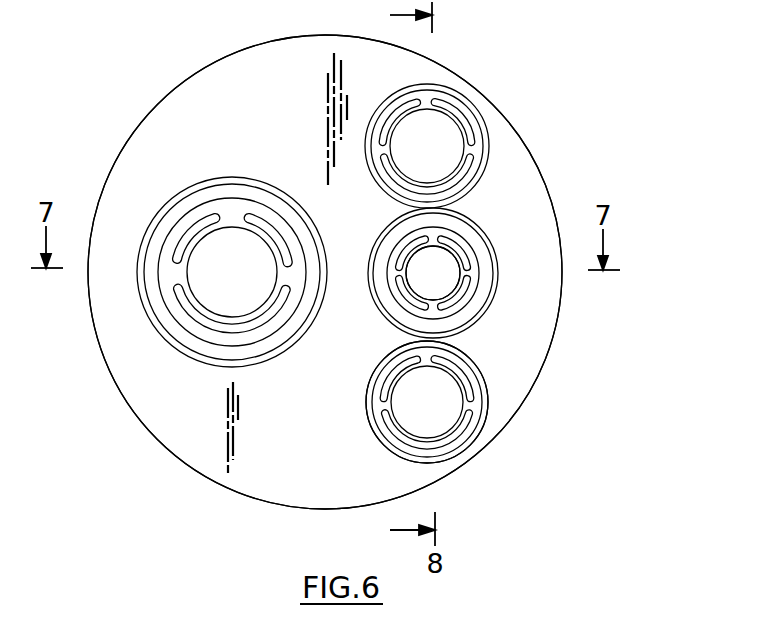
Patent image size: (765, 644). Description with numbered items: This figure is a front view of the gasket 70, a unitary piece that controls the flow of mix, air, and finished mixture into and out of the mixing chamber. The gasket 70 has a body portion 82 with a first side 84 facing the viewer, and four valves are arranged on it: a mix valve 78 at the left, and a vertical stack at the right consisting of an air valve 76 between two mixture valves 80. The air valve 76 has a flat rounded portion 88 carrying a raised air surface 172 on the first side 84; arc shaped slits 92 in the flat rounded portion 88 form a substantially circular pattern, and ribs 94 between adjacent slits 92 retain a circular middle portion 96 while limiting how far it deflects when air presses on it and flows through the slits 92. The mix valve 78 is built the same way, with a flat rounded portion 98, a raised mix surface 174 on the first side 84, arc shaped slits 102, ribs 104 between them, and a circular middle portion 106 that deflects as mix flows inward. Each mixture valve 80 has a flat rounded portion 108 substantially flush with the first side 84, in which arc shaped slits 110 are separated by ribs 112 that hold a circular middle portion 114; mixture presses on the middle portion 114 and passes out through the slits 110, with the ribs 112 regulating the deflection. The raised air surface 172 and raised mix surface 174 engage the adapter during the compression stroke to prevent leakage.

The gasket 70 is at (585, 127).
The air valve 76 is at (478, 256).
The mix valve 78 is at (160, 210).
The mixture valves 80 is at (456, 93).
The body portion 82 is at (266, 73).
The first side 84 is at (208, 443).
The flat rounded portion 88 is at (472, 250).
The arc shaped slits 92 is at (453, 243).
The ribs 94 is at (432, 308).
The circular middle portion 96 is at (446, 284).
The flat rounded portion 98 is at (196, 221).
The arc shaped slits 102 is at (176, 290).
The ribs 104 is at (228, 213).
The circular middle portion 106 is at (220, 294).
The flat rounded portion 108 is at (467, 453).
The arc shaped slits 110 is at (404, 445).
The ribs 112 is at (378, 404).
The circular middle portion 114 is at (441, 393).
The raised air surface 172 is at (432, 260).
The raised mix surface 174 is at (212, 262).